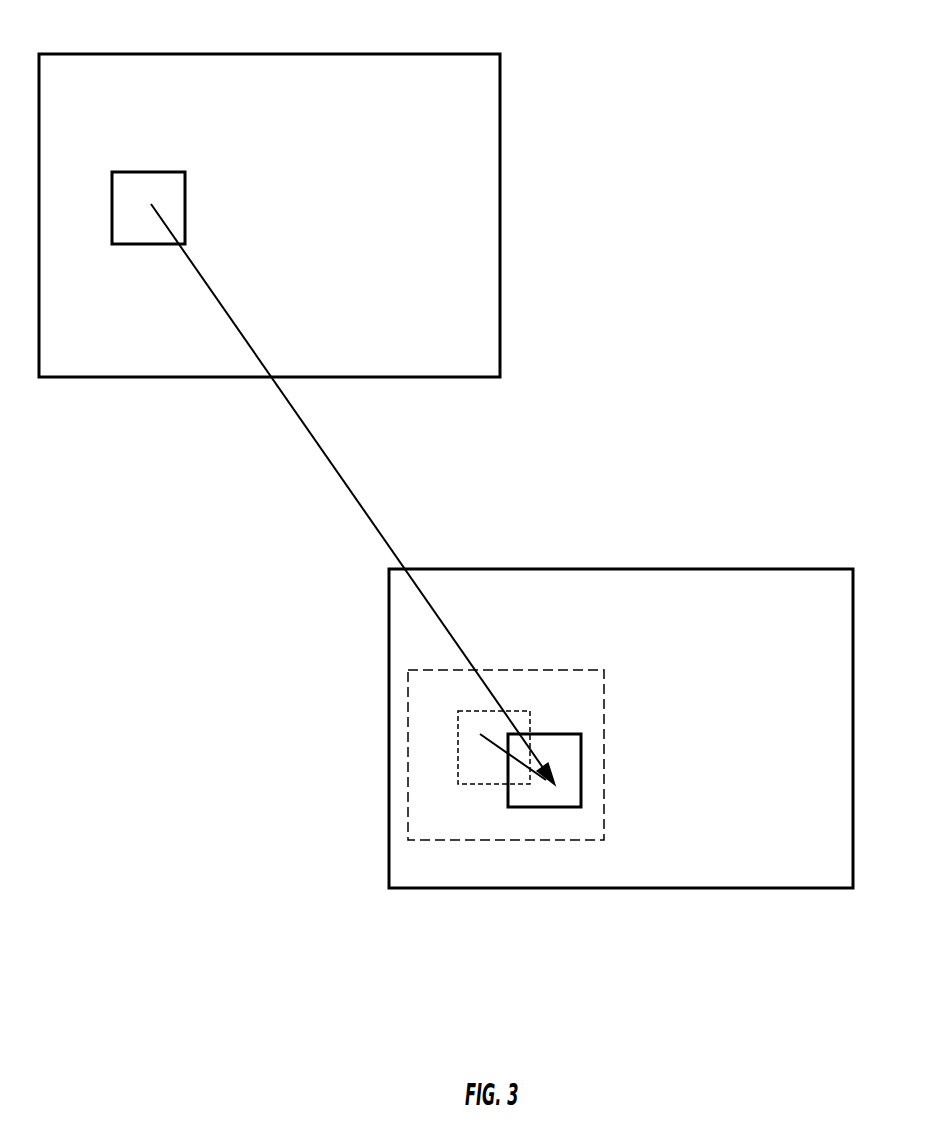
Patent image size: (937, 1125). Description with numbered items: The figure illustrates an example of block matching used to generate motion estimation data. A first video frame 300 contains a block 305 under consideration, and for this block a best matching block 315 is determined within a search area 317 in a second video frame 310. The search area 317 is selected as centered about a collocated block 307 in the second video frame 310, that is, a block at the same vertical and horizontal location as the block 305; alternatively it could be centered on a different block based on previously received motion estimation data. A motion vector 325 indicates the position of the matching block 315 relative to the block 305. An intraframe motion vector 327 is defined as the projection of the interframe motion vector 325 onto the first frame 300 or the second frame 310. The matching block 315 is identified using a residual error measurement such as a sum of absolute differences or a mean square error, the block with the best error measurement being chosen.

The first video frame 300 is at (443, 54).
The block 305 is at (176, 172).
The second video frame 310 is at (795, 568).
The matching block 315 is at (581, 753).
The search area 317 is at (545, 668).
The collocated block 307 is at (510, 711).
The motion vector 325 is at (335, 467).
The intraframe motion vector 327 is at (495, 747).